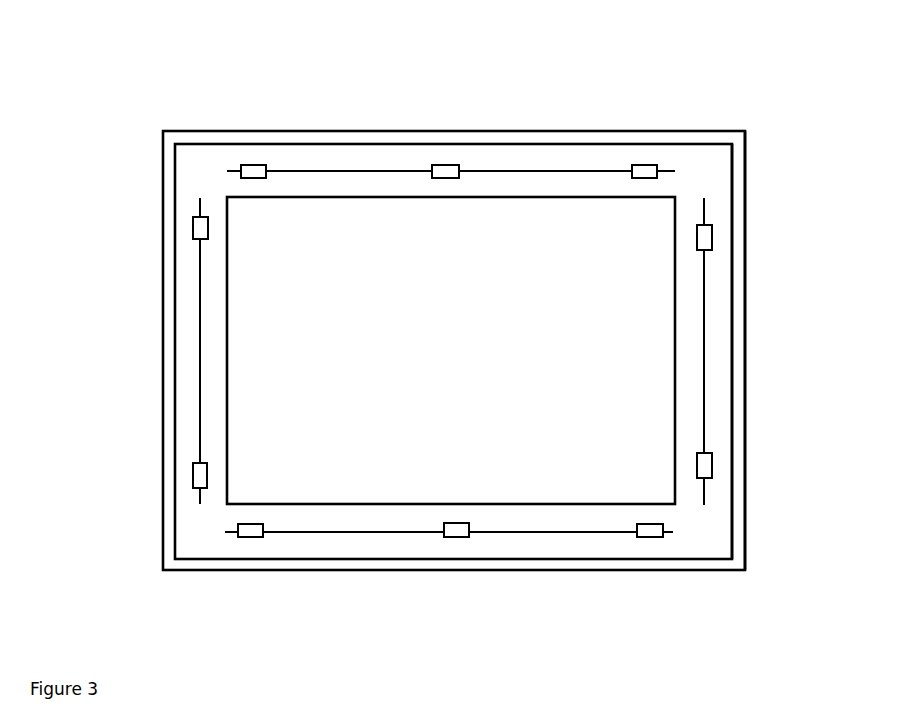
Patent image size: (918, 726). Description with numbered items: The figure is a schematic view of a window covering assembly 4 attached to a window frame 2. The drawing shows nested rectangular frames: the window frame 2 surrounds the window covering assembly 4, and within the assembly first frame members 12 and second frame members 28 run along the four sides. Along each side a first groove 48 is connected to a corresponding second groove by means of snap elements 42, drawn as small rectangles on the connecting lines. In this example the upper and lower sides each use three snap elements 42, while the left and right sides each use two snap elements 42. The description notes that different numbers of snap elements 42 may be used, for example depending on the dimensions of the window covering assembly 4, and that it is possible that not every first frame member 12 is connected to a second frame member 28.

The window frame 2 is at (697, 145).
The window covering assembly 4 is at (646, 130).
The first frame member 12 is at (731, 319).
The second frame member 28 is at (747, 237).
The snap element 42 is at (645, 165).
The first groove 48 is at (705, 428).